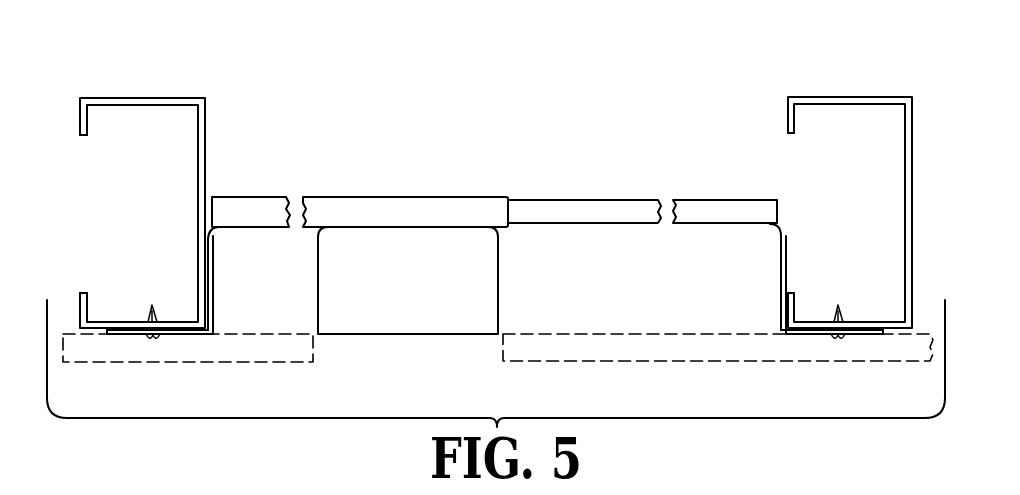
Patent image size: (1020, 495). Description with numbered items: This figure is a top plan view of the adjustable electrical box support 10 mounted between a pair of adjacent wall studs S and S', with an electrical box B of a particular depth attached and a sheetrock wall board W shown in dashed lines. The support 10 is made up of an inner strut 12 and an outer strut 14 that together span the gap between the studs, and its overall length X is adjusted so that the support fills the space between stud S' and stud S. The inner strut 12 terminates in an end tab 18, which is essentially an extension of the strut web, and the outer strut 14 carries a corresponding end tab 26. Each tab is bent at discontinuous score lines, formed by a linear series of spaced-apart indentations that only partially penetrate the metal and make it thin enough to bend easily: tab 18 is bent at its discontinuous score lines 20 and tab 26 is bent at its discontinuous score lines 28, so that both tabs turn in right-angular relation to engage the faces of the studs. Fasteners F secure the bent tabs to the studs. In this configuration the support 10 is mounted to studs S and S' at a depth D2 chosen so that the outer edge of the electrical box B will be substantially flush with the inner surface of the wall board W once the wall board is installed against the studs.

The adjustable electrical box support 10 is at (442, 186).
The inner strut 12 is at (740, 200).
The outer strut 14 is at (259, 197).
The tab 18 is at (787, 273).
The discontinuous score lines 20 is at (780, 329).
The tab 26 is at (210, 270).
The discontinuous score lines 28 is at (214, 328).
The wall stud S is at (850, 212).
The wall stud S' is at (142, 213).
The fastener F is at (150, 312).
The electrical box B is at (440, 334).
The wall board W is at (202, 365).
The length of support X is at (207, 142).
The depth D2 is at (713, 225).